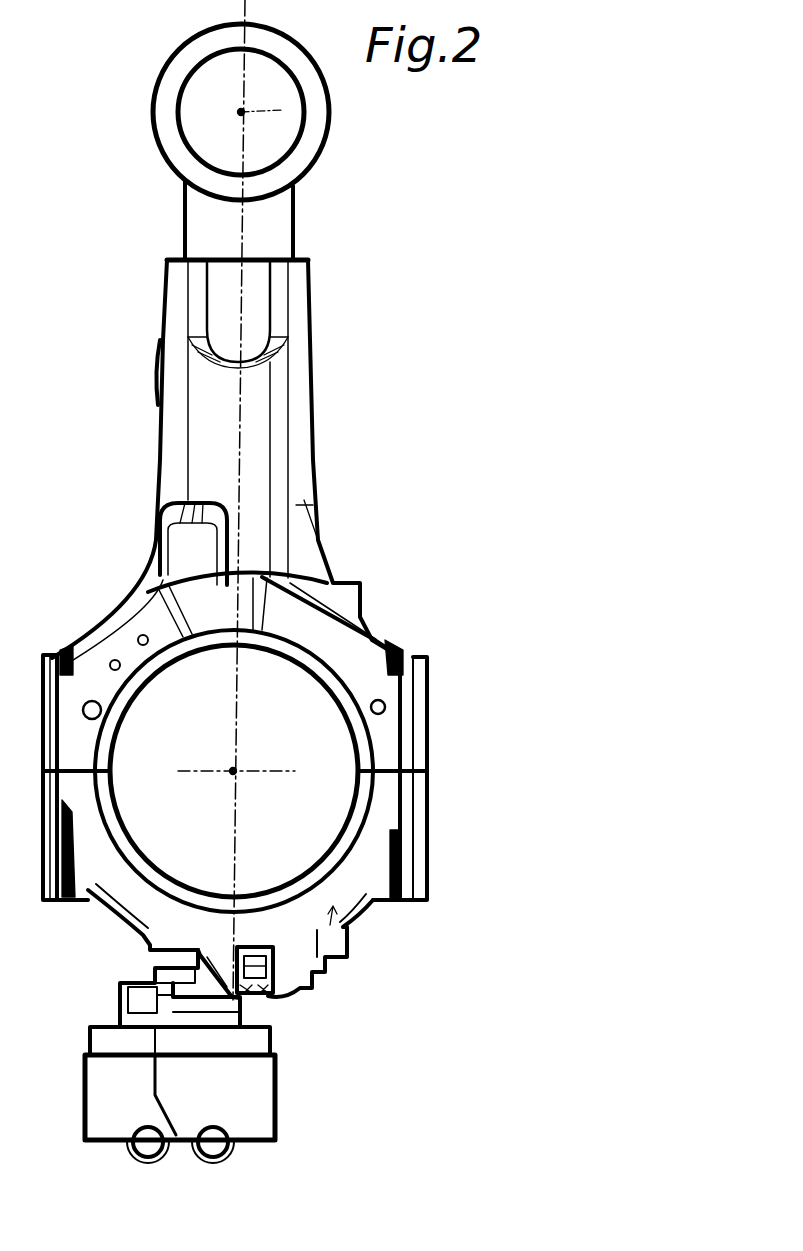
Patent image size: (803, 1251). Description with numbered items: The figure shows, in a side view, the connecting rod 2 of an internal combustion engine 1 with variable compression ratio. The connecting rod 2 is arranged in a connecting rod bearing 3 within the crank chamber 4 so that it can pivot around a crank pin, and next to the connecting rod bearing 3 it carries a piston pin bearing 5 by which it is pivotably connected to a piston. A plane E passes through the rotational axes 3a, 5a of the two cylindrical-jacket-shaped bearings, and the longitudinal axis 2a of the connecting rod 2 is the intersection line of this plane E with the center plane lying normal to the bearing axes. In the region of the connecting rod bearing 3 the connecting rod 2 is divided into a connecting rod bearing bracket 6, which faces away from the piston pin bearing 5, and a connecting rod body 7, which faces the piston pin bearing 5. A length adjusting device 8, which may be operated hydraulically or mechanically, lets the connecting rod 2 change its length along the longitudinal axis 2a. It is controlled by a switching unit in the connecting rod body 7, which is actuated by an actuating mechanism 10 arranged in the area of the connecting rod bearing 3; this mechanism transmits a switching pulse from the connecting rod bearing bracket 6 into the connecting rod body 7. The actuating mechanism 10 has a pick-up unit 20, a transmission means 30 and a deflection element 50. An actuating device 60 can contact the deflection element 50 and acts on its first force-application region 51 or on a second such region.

The internal combustion engine 1 is at (280, 582).
The connecting rod 2 is at (338, 437).
The longitudinal axis 2a is at (243, 250).
The connecting rod bearing 3 is at (306, 771).
The rotational axis 3a is at (233, 772).
The crank chamber 4 is at (440, 594).
The piston pin bearing 5 is at (228, 118).
The rotational axis 5a is at (246, 111).
The connecting rod bearing bracket 6 is at (107, 917).
The connecting rod body 7 is at (318, 556).
The length adjusting device 8 is at (195, 258).
The actuating mechanism 10 is at (347, 933).
The pick-up unit 20 is at (212, 607).
The transmission means 30 is at (390, 832).
The deflection element 50 is at (313, 989).
The first force-application region 51 is at (257, 998).
The actuating device 60 is at (255, 1118).
The plane ε E is at (233, 771).